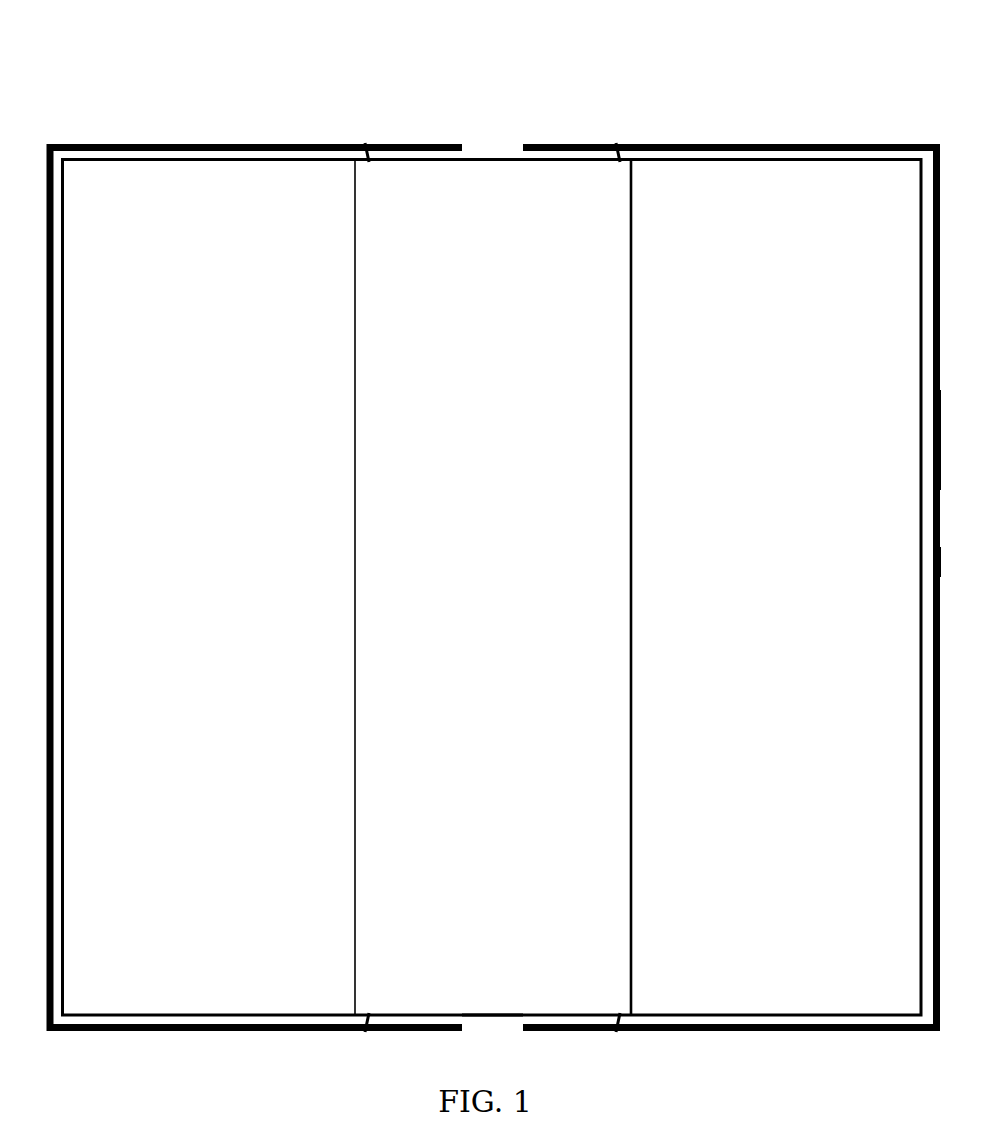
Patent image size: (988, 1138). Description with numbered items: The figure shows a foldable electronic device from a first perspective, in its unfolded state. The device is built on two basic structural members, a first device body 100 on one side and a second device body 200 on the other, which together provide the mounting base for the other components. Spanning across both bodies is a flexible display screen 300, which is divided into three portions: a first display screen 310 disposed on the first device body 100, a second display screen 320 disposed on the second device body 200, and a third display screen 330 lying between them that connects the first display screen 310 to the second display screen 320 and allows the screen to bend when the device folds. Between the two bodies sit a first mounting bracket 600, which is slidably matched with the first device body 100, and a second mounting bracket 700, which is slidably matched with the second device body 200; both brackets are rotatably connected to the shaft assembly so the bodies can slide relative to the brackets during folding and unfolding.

The first device body 100 is at (210, 144).
The second device body 200 is at (780, 143).
The flexible display screen 300 is at (148, 208).
The first display screen 310 is at (307, 172).
The second display screen 320 is at (740, 172).
The third display screen 330 is at (492, 160).
The first mounting bracket 600 is at (412, 146).
The second mounting bracket 700 is at (572, 146).